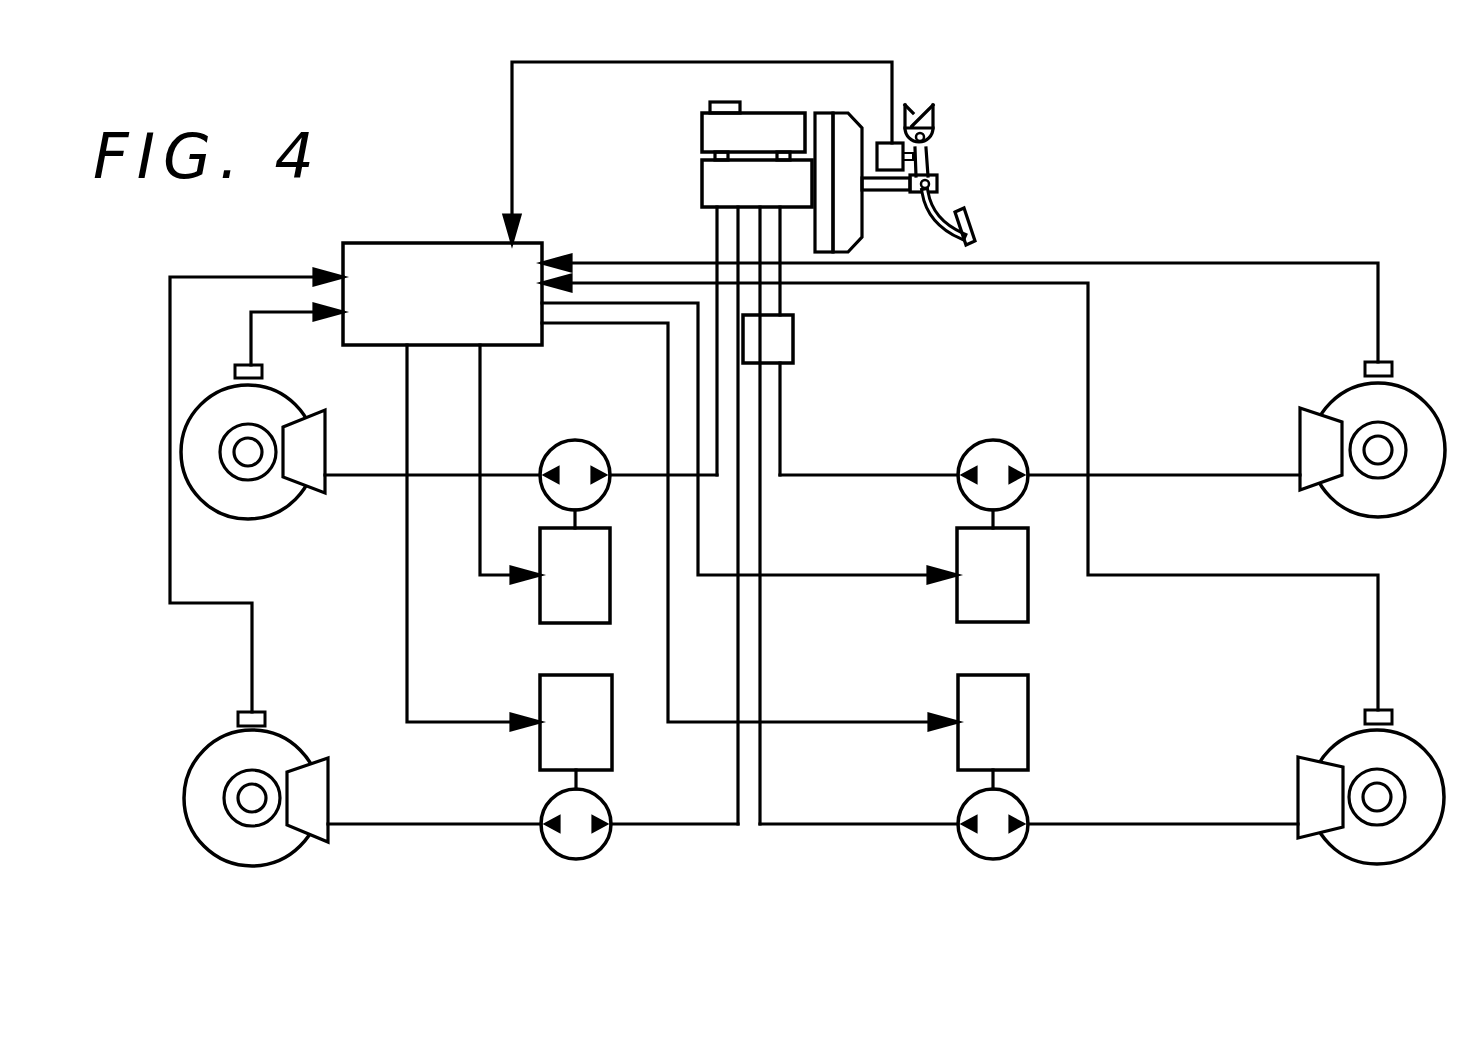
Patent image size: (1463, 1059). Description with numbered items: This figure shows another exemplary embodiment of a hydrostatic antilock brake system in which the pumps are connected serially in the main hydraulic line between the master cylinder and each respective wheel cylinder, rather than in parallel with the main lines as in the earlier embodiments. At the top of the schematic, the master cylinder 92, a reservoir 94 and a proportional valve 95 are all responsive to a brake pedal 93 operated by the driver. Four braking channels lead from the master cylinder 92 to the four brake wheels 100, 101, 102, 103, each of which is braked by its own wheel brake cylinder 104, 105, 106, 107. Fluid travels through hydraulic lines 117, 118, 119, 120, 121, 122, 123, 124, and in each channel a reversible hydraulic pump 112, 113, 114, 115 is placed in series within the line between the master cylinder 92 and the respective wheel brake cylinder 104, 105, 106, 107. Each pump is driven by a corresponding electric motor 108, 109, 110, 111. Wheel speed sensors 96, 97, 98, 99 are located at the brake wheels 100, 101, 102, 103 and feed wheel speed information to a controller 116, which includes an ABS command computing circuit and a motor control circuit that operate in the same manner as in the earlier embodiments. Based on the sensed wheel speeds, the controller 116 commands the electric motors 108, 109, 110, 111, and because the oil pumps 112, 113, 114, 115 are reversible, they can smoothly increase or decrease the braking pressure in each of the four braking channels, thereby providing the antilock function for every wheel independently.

The master cylinder 92 is at (757, 179).
The brake pedal 93 is at (972, 226).
The reservoir 94 is at (753, 127).
The proportional valve 95 is at (768, 339).
The wheel speed sensor 96 is at (237, 371).
The wheel speed sensor 97 is at (238, 721).
The wheel speed sensor 98 is at (1392, 370).
The wheel speed sensor 99 is at (1365, 714).
The brake wheel 100 is at (248, 452).
The brake wheel 101 is at (252, 798).
The brake wheel 102 is at (1378, 450).
The brake wheel 103 is at (1377, 797).
The wheel brake cylinder 104 is at (315, 455).
The wheel brake cylinder 105 is at (318, 790).
The wheel brake cylinder 106 is at (1310, 427).
The wheel brake cylinder 107 is at (1308, 777).
The electric motor 108 is at (575, 575).
The electric motor 109 is at (576, 722).
The electric motor 110 is at (992, 575).
The electric motor 111 is at (993, 722).
The hydraulic pump 112 is at (578, 455).
The hydraulic pump 113 is at (575, 843).
The hydraulic pump 114 is at (996, 448).
The hydraulic pump 115 is at (992, 846).
The controller 116 is at (442, 294).
The hydraulic line 117 is at (640, 474).
The hydraulic line 118 is at (452, 474).
The hydraulic line 119 is at (675, 823).
The hydraulic line 120 is at (443, 823).
The hydraulic line 121 is at (873, 474).
The hydraulic line 122 is at (1208, 474).
The hydraulic line 123 is at (760, 636).
The hydraulic line 124 is at (1165, 823).